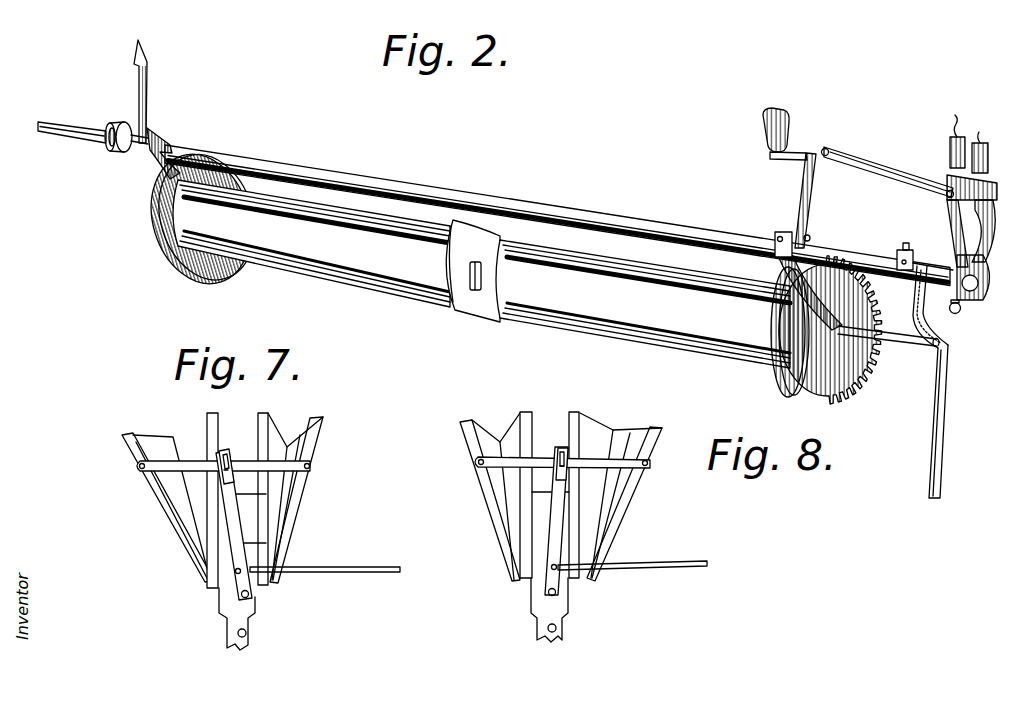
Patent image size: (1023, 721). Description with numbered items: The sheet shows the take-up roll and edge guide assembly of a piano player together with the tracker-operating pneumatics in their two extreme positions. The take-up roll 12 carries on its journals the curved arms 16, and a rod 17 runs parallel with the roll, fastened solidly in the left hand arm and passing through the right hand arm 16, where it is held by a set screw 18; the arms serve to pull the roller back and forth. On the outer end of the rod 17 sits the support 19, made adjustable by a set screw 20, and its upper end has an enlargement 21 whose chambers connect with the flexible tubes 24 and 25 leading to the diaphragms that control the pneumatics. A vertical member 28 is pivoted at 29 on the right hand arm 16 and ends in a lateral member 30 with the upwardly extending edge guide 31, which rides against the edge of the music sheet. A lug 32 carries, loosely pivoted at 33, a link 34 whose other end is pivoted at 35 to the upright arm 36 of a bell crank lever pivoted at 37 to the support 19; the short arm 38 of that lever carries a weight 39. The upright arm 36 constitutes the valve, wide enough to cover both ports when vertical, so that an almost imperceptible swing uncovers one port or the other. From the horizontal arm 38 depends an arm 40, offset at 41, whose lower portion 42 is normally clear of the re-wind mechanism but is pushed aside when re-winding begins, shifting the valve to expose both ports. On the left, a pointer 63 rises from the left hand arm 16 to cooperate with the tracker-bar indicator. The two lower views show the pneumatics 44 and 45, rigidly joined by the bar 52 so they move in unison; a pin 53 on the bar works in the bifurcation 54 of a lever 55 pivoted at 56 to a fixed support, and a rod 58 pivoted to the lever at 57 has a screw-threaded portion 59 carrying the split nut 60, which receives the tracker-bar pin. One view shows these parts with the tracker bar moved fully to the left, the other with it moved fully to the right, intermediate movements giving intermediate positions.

In FIG. 2, the take-up roll 12 is at (390, 284).
In FIG. 2, the curved arms 16 is at (162, 138).
In FIG. 2, the rod 17 is at (543, 211).
In FIG. 2, the set screw 18 is at (810, 237).
In FIG. 2, the support 19 is at (970, 255).
In FIG. 2, the set screw 20 is at (957, 312).
In FIG. 2, the enlargement 21 is at (982, 213).
In FIG. 2, the flexible tube 24 is at (986, 143).
In FIG. 2, the flexible tube 25 is at (951, 133).
In FIG. 2, the vertical member 28 is at (806, 198).
In FIG. 2, the pivot 29 is at (776, 237).
In FIG. 2, the lateral member 30 is at (778, 154).
In FIG. 2, the edge guide 31 is at (764, 123).
In FIG. 2, the lug 32 is at (833, 148).
In FIG. 2, the pivot 33 is at (824, 149).
In FIG. 2, the link 34 is at (893, 170).
In FIG. 2, the pivotal connection 35 is at (943, 195).
In FIG. 2, the upright arm 36 is at (952, 222).
In FIG. 2, the pivot 37 is at (975, 272).
In FIG. 2, the short arm 38 is at (907, 237).
In FIG. 2, the weight 39 is at (897, 256).
In FIG. 2, the arm 40 is at (917, 296).
In FIG. 2, the offset 41 is at (953, 350).
In FIG. 2, the lower portion 42 is at (945, 449).
In FIG. 7, the pneumatic 44 is at (287, 430).
In FIG. 8, the pneumatic 44 is at (600, 435).
In FIG. 7, the pneumatic 45 is at (173, 437).
In FIG. 8, the pneumatic 45 is at (500, 440).
In FIG. 7, the bar 52 is at (292, 466).
In FIG. 8, the bar 52 is at (598, 465).
In FIG. 7, the pin 53 is at (226, 462).
In FIG. 8, the pin 53 is at (563, 458).
In FIG. 7, the bifurcation 54 is at (232, 478).
In FIG. 8, the bifurcation 54 is at (569, 477).
In FIG. 7, the lever 55 is at (252, 541).
In FIG. 8, the lever 55 is at (556, 540).
In FIG. 7, the pivot 56 is at (252, 598).
In FIG. 8, the pivot 56 is at (560, 596).
In FIG. 7, the pivotal connection 57 is at (236, 574).
In FIG. 8, the pivotal connection 57 is at (560, 570).
In FIG. 2, the rod 58 is at (58, 121).
In FIG. 7, the rod 58 is at (347, 567).
In FIG. 8, the rod 58 is at (672, 562).
In FIG. 2, the screw-threaded portion 59 is at (103, 137).
In FIG. 2, the split nut 60 is at (112, 124).
In FIG. 2, the pointer 63 is at (147, 80).